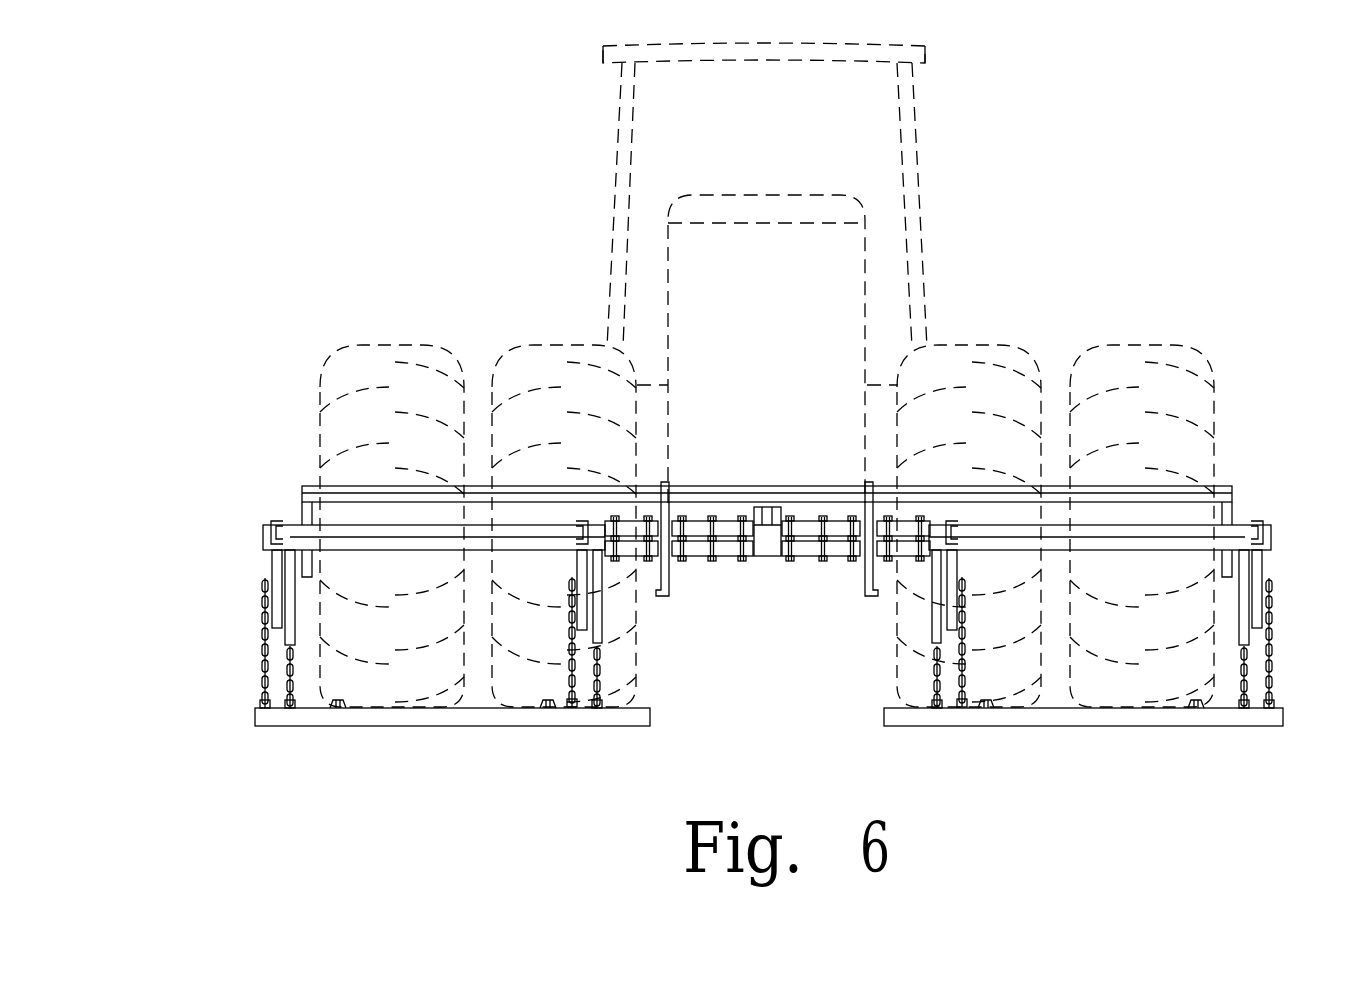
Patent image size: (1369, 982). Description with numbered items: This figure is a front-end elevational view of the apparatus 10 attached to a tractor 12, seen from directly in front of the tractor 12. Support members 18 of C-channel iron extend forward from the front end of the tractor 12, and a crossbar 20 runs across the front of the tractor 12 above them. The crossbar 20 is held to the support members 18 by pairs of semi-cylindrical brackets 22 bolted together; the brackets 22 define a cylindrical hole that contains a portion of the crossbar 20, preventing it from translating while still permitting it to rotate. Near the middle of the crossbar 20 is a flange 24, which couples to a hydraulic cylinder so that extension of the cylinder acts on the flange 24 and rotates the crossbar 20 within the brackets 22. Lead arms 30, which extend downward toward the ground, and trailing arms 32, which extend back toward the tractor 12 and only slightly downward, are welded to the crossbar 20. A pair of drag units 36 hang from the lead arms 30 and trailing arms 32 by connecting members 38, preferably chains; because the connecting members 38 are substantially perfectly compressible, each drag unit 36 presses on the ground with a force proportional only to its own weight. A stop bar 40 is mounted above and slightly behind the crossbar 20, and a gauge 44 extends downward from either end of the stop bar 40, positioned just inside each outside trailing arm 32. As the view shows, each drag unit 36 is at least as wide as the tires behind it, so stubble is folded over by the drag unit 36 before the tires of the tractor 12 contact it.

The apparatus 10 is at (737, 624).
The tractor 12 is at (921, 138).
The support member 18 is at (670, 588).
The crossbar 20 is at (295, 535).
The semi-cylindrical brackets 22 is at (730, 558).
The flange 24 is at (765, 557).
The lead arms 30 is at (290, 620).
The trailing arms 32 is at (275, 565).
The drag units 36 is at (373, 712).
The connecting members 38 is at (265, 680).
The stop bar 40 is at (306, 486).
The gauge 44 is at (303, 501).